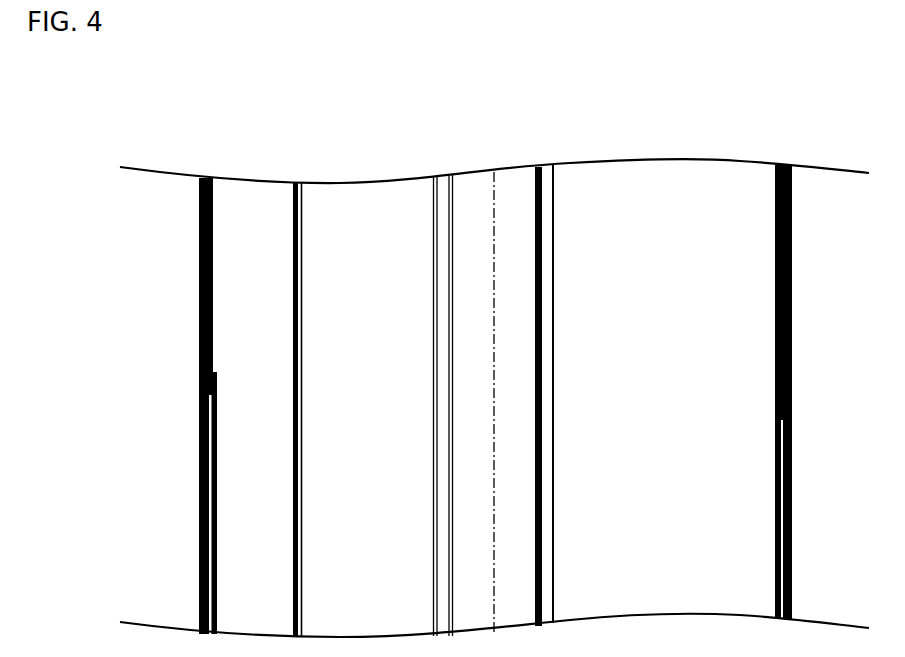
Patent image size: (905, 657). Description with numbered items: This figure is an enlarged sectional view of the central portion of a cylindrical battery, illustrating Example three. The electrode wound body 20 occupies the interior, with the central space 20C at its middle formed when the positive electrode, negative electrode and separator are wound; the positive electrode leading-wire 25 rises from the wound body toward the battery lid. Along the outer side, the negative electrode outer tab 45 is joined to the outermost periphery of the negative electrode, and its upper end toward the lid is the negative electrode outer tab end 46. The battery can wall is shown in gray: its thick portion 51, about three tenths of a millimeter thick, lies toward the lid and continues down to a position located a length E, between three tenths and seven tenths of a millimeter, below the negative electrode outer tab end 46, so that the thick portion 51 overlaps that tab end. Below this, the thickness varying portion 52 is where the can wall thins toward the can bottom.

The electrode wound body 20 is at (781, 552).
The central space 20C is at (512, 182).
The positive electrode leading-wire 25 is at (299, 186).
The negative electrode outer tab 45 is at (212, 530).
The negative electrode outer tab end 46 is at (213, 372).
The thick portion 51 is at (199, 260).
The thickness varying portion 52 is at (199, 432).
The length E is at (180, 427).